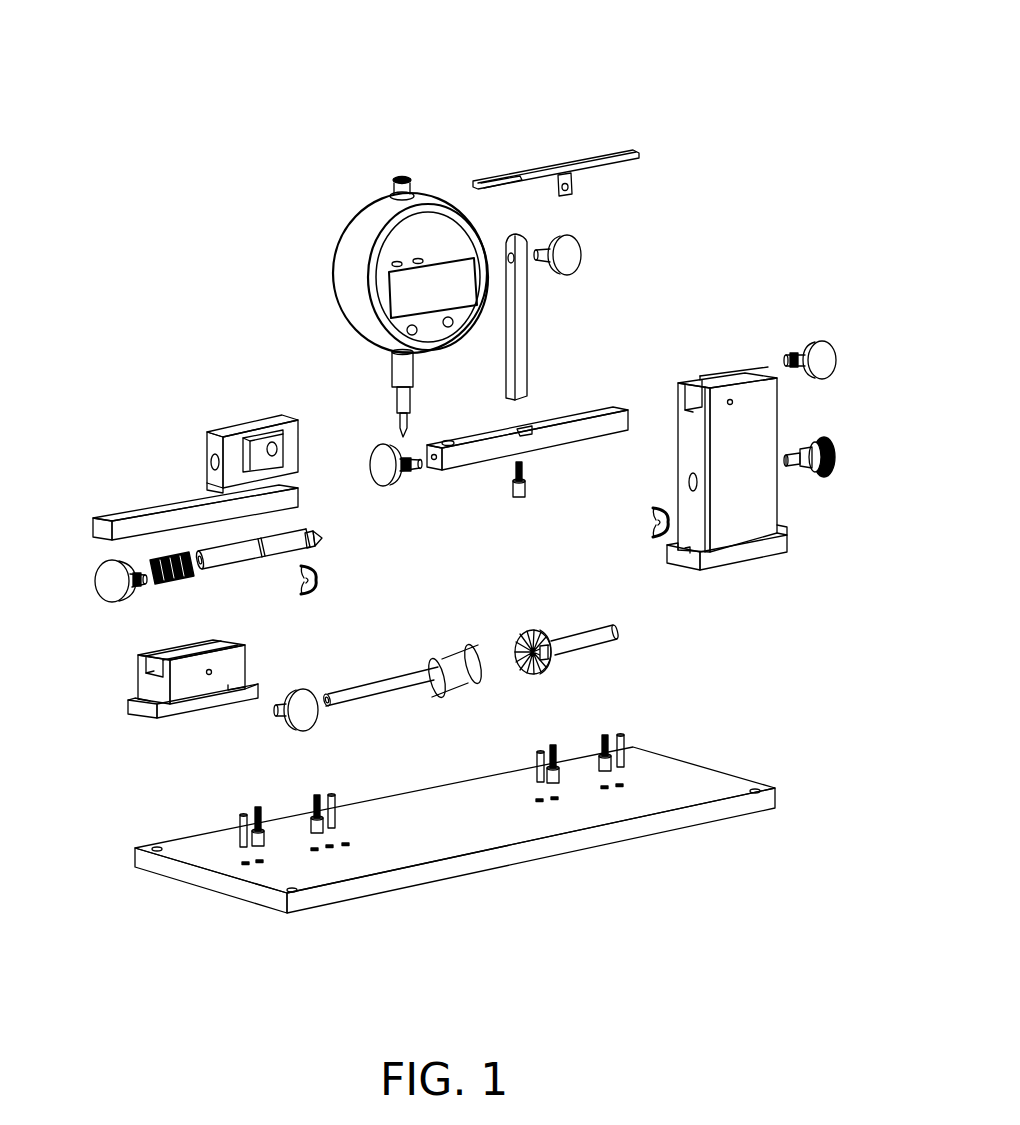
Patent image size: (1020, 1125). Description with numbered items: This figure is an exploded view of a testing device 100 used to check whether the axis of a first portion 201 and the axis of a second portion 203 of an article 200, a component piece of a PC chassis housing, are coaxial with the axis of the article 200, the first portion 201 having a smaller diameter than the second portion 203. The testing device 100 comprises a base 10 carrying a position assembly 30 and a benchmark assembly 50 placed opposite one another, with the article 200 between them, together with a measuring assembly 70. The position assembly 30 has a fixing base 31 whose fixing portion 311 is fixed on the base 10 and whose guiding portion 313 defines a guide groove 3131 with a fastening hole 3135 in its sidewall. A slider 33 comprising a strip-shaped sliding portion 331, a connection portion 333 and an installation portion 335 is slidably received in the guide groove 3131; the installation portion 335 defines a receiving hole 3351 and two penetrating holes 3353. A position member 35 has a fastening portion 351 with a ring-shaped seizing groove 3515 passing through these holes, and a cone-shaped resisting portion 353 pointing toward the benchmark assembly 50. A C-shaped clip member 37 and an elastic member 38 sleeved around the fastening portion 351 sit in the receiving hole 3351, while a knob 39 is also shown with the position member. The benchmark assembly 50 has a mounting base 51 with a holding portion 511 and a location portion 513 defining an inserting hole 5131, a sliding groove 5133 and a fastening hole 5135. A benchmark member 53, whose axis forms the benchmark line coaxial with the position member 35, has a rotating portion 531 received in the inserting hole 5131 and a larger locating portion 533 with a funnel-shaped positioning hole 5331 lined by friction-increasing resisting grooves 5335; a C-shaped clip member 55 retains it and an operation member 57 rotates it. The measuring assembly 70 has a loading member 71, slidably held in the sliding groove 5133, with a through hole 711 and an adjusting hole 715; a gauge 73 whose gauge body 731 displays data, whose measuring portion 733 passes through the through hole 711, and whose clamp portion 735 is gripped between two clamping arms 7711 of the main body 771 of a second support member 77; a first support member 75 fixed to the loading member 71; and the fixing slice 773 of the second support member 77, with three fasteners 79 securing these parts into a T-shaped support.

The testing device 100 is at (412, 34).
The base 10 is at (688, 775).
The position assembly 30 is at (103, 360).
The fixing base 31 is at (140, 783).
The fixing portion 311 is at (150, 712).
The guiding portion 313 is at (138, 688).
The guide groove 3131 is at (150, 672).
The fastening hole 3135 is at (211, 675).
The slider 33 is at (184, 452).
The sliding portion 331 is at (140, 510).
The connection portion 333 is at (213, 487).
The installation portion 335 is at (207, 468).
The receiving hole 3351 is at (257, 450).
The penetrating holes 3353 is at (212, 460).
The position member 35 is at (393, 505).
The fastening portion 351 is at (312, 540).
The seizing groove 3515 is at (258, 556).
The resisting portion 353 is at (321, 540).
The clip member 37 is at (320, 585).
The elastic member 38 is at (187, 566).
The knob 39 is at (110, 580).
The benchmark assembly 50 is at (752, 318).
The mounting base 51 is at (815, 624).
The holding portion 511 is at (712, 560).
The location portion 513 is at (735, 505).
The inserting hole 5131 is at (690, 482).
The sliding groove 5133 is at (690, 398).
The fastening hole 5135 is at (733, 403).
The benchmark member 53 is at (598, 572).
The rotating portion 531 is at (603, 637).
The locating portion 533 is at (533, 633).
The positioning hole 5331 is at (530, 670).
The resisting grooves 5335 is at (516, 645).
The clip member 55 is at (650, 520).
The operation member 57 is at (832, 473).
The measuring assembly 70 is at (405, 152).
The loading member 71 is at (590, 410).
The through hole 711 is at (447, 441).
The adjusting hole 715 is at (432, 468).
The gauge 73 is at (244, 150).
The gauge body 731 is at (365, 242).
The measuring portion 733 is at (397, 368).
The clamp portion 735 is at (393, 181).
The first support member 75 is at (526, 313).
The second support member 77 is at (630, 92).
The main body 771 is at (556, 171).
The clamping arms 7711 is at (478, 183).
The fixing slice 773 is at (568, 188).
The fasteners 79 is at (565, 256).
The article 200 is at (373, 666).
The first portion 201 is at (365, 695).
The second portion 203 is at (458, 683).